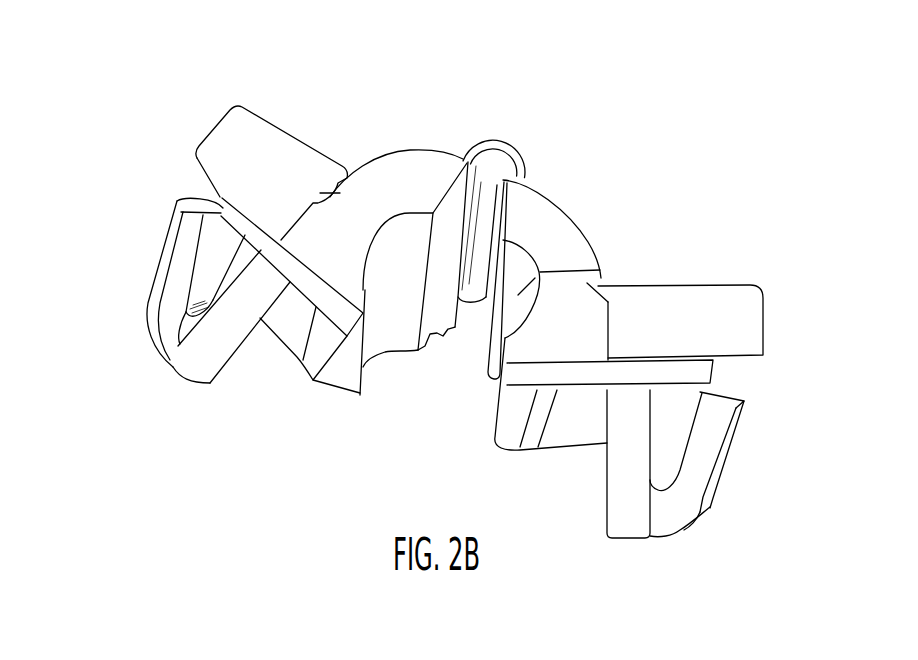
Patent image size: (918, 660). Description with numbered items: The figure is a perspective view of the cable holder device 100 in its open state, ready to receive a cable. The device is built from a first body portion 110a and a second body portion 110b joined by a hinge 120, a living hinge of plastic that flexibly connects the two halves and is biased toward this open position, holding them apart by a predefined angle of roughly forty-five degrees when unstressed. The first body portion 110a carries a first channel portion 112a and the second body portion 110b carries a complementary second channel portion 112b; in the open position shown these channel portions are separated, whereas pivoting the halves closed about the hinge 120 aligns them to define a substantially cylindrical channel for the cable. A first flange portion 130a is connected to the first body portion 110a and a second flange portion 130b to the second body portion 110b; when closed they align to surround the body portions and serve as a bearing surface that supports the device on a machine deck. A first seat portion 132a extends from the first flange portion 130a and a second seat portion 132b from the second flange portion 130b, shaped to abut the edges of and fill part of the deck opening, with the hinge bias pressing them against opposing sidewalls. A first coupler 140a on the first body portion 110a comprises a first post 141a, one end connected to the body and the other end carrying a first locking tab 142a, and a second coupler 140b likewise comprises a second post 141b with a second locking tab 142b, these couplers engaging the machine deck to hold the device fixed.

The cable holder device 100 is at (168, 507).
The first body portion 110a is at (580, 310).
The second body portion 110b is at (378, 244).
The first channel portion 112a is at (600, 270).
The second channel portion 112b is at (376, 340).
The hinge 120 is at (503, 140).
The first flange portion 130a is at (733, 317).
The second flange portion 130b is at (227, 144).
The first seat portion 132a is at (715, 378).
The second seat portion 132b is at (222, 197).
The first coupler 140a is at (662, 489).
The second coupler 140b is at (166, 320).
The first post 141a is at (604, 483).
The second post 141b is at (187, 368).
The first locking tab 142a is at (731, 457).
The second locking tab 142b is at (168, 237).